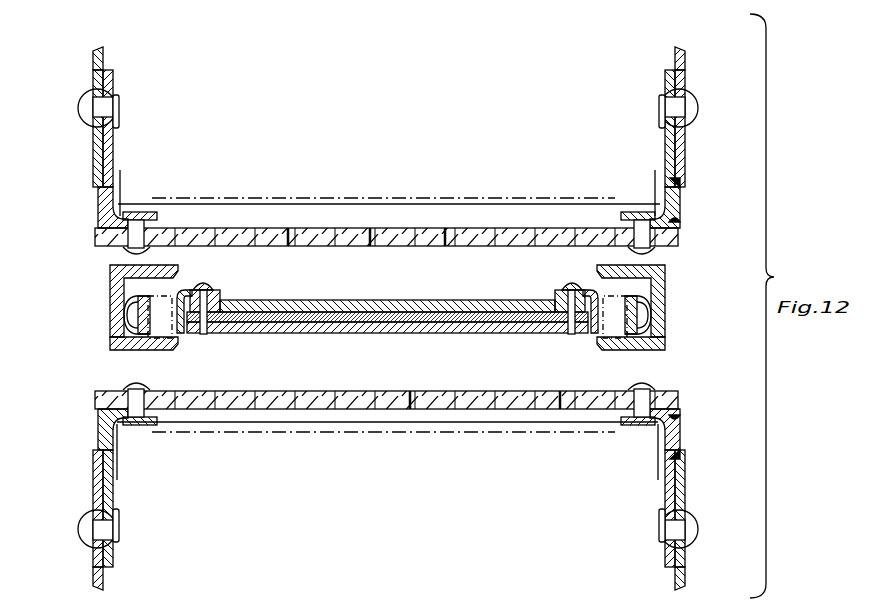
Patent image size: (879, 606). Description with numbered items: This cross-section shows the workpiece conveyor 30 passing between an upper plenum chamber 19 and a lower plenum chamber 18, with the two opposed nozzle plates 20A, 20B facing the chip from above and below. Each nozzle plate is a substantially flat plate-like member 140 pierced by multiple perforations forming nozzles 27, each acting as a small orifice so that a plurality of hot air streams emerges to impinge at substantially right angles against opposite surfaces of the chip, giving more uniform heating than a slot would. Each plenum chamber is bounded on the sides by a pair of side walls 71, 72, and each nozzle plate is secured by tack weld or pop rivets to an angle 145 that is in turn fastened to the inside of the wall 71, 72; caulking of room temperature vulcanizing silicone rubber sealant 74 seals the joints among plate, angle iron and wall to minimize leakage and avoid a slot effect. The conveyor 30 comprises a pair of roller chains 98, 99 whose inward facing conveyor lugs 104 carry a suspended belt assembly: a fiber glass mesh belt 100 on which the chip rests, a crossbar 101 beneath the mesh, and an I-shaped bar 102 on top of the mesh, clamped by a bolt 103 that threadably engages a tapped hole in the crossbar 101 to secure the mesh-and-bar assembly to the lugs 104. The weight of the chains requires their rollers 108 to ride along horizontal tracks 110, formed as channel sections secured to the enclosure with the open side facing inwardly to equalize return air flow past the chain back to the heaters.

The plenum chamber 19 is at (380, 78).
The plenum chamber 18 is at (384, 531).
The side wall 72 is at (93, 70).
The side wall 71 is at (686, 61).
The sealant 74 is at (677, 222).
The angle 145 is at (155, 213).
The plate-like member 140 is at (128, 240).
The nozzles 27 is at (445, 231).
The nozzle plate 20A is at (346, 247).
The nozzle plate 20B is at (368, 391).
The conveyor 30 is at (262, 343).
The fiber glass mesh belt 100 is at (402, 312).
The crossbar 101 is at (357, 326).
The I-shaped bar 102 is at (268, 300).
The bolt 103 is at (200, 284).
The conveyor lugs 104 is at (214, 297).
The rollers 108 is at (160, 312).
The horizontal tracks 110 is at (110, 342).
The roller chain 98 is at (137, 310).
The roller chain 99 is at (636, 305).